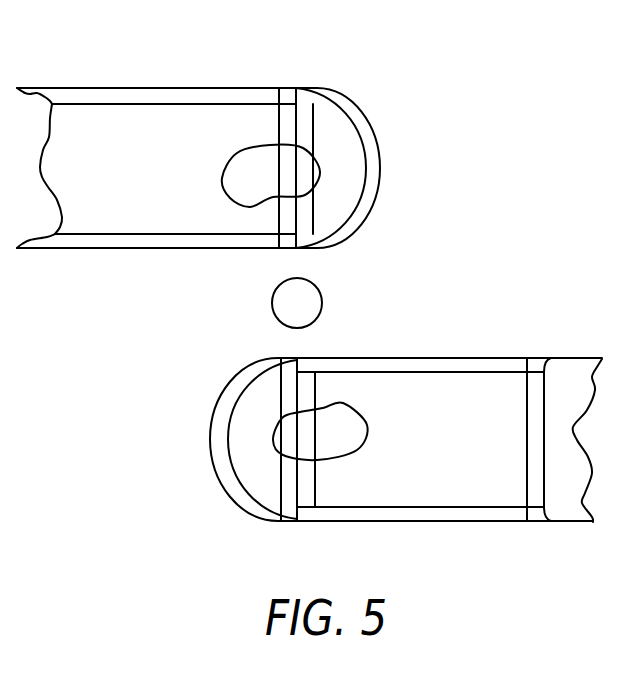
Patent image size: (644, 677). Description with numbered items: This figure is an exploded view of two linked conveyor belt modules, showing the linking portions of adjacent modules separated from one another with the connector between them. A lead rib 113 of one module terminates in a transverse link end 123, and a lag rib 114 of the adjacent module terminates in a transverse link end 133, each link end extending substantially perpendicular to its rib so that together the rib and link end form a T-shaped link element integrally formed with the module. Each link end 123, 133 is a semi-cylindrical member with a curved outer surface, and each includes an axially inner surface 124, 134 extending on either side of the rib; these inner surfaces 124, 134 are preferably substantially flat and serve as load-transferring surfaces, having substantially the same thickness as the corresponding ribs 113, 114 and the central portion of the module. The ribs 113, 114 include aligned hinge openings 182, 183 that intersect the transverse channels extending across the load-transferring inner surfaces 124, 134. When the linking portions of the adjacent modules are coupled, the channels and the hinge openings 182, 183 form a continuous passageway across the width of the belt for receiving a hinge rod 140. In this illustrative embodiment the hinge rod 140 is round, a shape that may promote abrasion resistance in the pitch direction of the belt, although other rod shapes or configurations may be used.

The lead rib 113 is at (143, 125).
The lag rib 114 is at (432, 397).
The transverse link end 123 is at (343, 140).
The axially inner surface 124 is at (292, 122).
The transverse link end 133 is at (240, 428).
The axially inner surface 134 is at (300, 393).
The hinge rod 140 is at (322, 292).
The hinge opening 182 is at (293, 190).
The hinge opening 183 is at (327, 450).